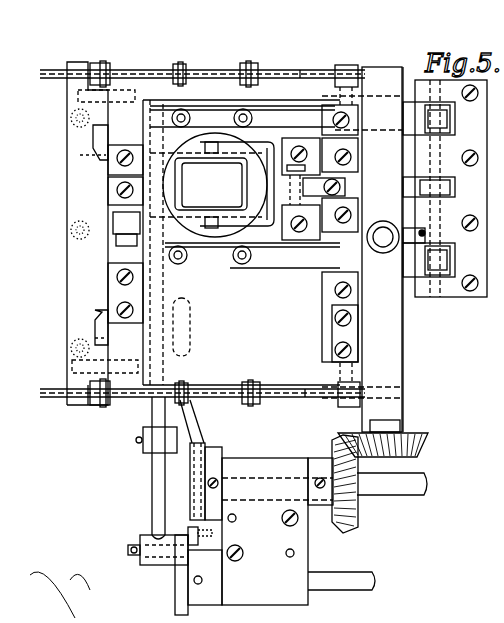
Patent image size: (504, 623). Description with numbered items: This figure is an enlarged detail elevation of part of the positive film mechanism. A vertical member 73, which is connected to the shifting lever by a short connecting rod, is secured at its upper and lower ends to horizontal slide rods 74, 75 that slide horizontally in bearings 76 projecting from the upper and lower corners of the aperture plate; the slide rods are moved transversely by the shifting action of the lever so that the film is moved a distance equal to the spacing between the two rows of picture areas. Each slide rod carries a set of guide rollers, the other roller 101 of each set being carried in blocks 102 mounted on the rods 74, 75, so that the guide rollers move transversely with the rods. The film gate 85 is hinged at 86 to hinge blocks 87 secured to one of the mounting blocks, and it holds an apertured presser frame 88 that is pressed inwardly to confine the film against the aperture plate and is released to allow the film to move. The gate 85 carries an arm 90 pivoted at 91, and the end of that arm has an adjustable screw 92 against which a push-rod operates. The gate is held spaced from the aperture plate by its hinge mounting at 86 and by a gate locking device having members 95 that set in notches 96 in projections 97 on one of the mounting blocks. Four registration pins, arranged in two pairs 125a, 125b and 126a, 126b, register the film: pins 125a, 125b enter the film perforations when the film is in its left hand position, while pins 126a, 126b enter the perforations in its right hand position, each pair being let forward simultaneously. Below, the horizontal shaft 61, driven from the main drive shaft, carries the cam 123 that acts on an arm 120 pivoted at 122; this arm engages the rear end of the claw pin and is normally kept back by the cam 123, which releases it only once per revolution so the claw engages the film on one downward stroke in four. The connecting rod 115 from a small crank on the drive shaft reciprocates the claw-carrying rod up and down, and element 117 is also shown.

The horizontal shaft 61 is at (276, 482).
The vertical member 73 is at (362, 249).
The horizontal slide rod 74 is at (306, 78).
The horizontal slide rod 75 is at (310, 400).
The bearing 76 is at (70, 64).
The film gate 85 is at (206, 237).
The hinge 86 is at (365, 96).
The hinge block 87 is at (330, 113).
The apertured presser frame 88 is at (182, 150).
The arm 90 is at (235, 152).
The pivot 91 is at (312, 189).
The adjustable screw 92 is at (364, 237).
The locking member 95 is at (108, 200).
The notch 96 is at (100, 160).
The projection 97 is at (96, 150).
The guide roller 101 is at (200, 70).
The block 102 is at (252, 70).
The connecting rod 115 is at (157, 498).
The block 117 is at (176, 596).
The arm 120 is at (198, 445).
The pivot 122 is at (400, 531).
The cam 123 is at (218, 470).
The registration pin 125a is at (176, 110).
The registration pin 125b is at (180, 263).
The registration pin 126a is at (236, 111).
The registration pin 126b is at (242, 265).